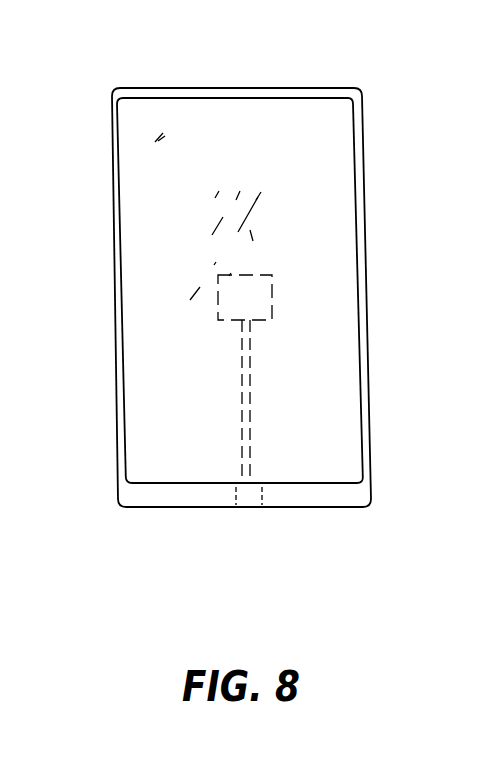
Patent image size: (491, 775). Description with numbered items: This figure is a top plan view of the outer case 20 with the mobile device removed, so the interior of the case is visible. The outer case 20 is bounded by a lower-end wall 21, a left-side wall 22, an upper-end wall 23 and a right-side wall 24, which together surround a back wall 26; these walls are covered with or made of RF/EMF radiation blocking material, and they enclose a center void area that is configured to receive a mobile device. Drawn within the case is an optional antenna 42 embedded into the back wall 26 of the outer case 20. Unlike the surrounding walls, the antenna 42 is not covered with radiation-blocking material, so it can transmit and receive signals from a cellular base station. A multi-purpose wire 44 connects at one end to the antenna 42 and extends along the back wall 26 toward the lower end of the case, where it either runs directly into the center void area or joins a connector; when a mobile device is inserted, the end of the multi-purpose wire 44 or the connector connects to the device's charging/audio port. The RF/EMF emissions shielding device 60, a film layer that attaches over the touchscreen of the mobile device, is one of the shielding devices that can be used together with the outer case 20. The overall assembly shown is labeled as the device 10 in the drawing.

The electronic device 10 is at (382, 65).
The outer case 20 is at (110, 85).
The lower-end wall 21 is at (351, 508).
The left-side wall 22 is at (368, 275).
The upper-end wall 23 is at (178, 88).
The right-side wall 24 is at (116, 275).
The back wall 26 is at (158, 137).
The antenna 42 is at (256, 303).
The multi-purpose wire 44 is at (250, 370).
The RF/EMF emissions shielding device 60 is at (327, 238).